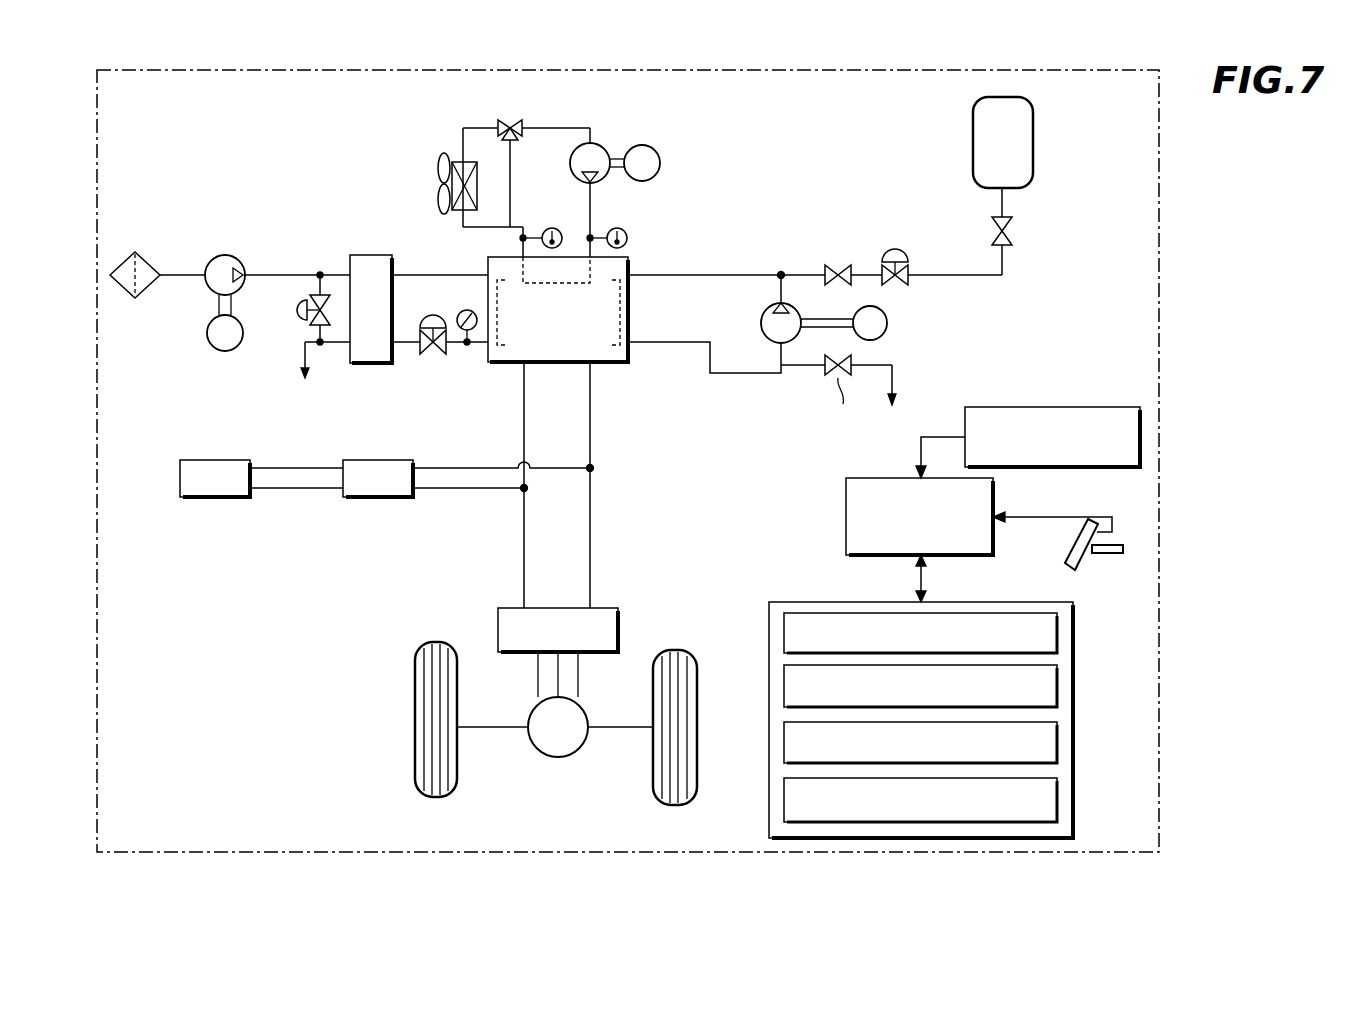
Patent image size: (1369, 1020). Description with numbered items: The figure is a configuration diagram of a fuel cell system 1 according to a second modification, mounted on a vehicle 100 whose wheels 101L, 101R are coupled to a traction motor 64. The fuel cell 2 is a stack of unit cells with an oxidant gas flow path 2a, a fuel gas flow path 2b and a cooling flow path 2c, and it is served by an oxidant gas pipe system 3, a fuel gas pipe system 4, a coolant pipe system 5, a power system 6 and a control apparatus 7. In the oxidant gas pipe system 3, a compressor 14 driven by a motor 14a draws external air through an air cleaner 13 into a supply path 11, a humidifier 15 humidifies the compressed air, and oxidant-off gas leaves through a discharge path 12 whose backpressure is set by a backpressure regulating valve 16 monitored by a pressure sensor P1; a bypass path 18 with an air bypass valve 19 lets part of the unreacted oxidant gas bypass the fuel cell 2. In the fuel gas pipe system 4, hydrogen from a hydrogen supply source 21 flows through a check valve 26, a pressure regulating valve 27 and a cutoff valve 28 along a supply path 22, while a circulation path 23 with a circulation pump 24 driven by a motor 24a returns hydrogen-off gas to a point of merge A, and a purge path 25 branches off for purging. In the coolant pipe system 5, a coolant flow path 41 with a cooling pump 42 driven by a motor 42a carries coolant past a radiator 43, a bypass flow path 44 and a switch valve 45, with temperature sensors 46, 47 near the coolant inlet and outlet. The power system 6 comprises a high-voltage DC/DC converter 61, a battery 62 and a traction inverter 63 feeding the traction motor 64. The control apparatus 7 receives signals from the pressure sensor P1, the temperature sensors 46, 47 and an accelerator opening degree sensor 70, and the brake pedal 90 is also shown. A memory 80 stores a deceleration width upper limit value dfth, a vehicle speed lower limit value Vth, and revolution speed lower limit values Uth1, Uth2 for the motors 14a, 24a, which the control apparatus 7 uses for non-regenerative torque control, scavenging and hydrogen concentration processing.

The fuel cell system 1 is at (1159, 183).
The fuel cell 2 is at (494, 365).
The oxidant gas flow path 2a is at (506, 338).
The fuel gas flow path 2b is at (611, 293).
The cooling flow path 2c is at (548, 286).
The oxidant gas pipe system 3 is at (283, 231).
The fuel gas pipe system 4 is at (912, 221).
The coolant pipe system 5 is at (423, 118).
The power system 6 is at (631, 429).
The control apparatus 7 is at (868, 478).
The supply path 11 is at (422, 273).
The discharge path 12 is at (461, 346).
The air cleaner 13 is at (150, 262).
The compressor 14 is at (222, 255).
The motor 14a is at (206, 333).
The humidifier 15 is at (370, 366).
The backpressure regulating valve 16 is at (430, 356).
The bypass path 18 is at (310, 294).
The air bypass valve 19 is at (310, 358).
The hydrogen supply source 21 is at (1034, 140).
The supply path 22 is at (1005, 262).
The circulation path 23 is at (752, 375).
The circulation pump 24 is at (762, 318).
The motor 24a is at (888, 323).
The purge path 25 is at (894, 372).
The check valve 26 is at (1013, 230).
The pressure regulating valve 27 is at (909, 263).
The cutoff valve 28 is at (838, 262).
The coolant flow path 41 is at (568, 127).
The cooling pump 42 is at (604, 148).
The motor 42a is at (654, 147).
The radiator 43 is at (437, 172).
The bypass flow path 44 is at (512, 180).
The switch valve 45 is at (512, 120).
The temperature sensor 46 is at (620, 228).
The temperature sensor 47 is at (555, 228).
The high-voltage DC/DC converter 61 is at (376, 460).
The battery 62 is at (220, 460).
The traction inverter 63 is at (497, 628).
The traction motor 64 is at (588, 714).
The accelerator opening degree sensor 70 is at (1070, 407).
The memory 80 is at (830, 602).
The brake pedal 90 is at (1072, 550).
The vehicle 100 is at (489, 748).
The wheel 101L is at (676, 652).
The wheel 101R is at (414, 712).
The point of merge A is at (784, 270).
The pressure sensor P1 is at (462, 312).
The deceleration width upper limit value dfth is at (1058, 637).
The vehicle speed lower limit value Vth is at (1058, 687).
The revolution speed lower limit value Uth1 is at (1058, 735).
The revolution speed lower limit value Uth2 is at (1058, 799).